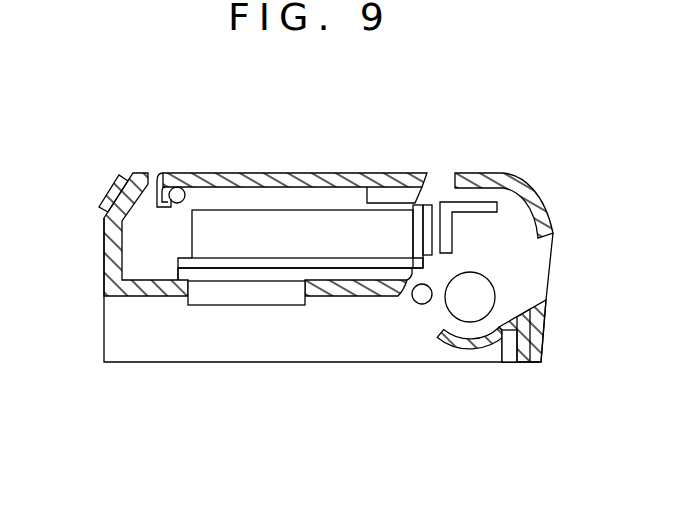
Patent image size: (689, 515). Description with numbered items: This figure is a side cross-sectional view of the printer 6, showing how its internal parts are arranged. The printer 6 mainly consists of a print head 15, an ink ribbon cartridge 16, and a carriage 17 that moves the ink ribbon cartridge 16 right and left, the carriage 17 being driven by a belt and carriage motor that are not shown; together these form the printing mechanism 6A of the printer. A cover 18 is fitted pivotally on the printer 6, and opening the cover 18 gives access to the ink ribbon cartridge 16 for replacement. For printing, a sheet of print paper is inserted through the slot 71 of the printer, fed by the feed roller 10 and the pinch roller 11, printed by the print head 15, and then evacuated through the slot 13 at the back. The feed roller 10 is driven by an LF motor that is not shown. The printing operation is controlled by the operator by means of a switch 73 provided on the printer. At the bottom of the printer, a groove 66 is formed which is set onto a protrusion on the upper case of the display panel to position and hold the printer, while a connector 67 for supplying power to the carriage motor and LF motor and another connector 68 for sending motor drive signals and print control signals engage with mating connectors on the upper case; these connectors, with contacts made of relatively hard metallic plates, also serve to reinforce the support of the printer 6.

The printer 6 is at (498, 174).
The printing mechanism 6A is at (455, 237).
The feed roller 10 is at (450, 316).
The pinch roller 11 is at (414, 303).
The slot 13 is at (442, 186).
The print head 15 is at (422, 232).
The ink ribbon cartridge 16 is at (192, 230).
The carriage 17 is at (180, 264).
The cover 18 is at (246, 172).
The groove 66 is at (522, 343).
The connector 67 is at (246, 347).
The connector 68 is at (250, 306).
The slot 71 is at (552, 270).
The switch 73 is at (103, 203).